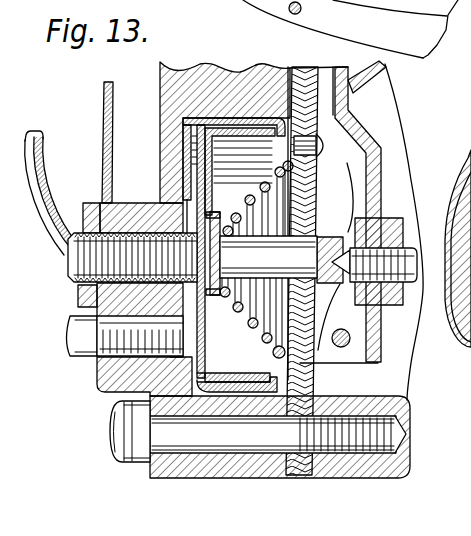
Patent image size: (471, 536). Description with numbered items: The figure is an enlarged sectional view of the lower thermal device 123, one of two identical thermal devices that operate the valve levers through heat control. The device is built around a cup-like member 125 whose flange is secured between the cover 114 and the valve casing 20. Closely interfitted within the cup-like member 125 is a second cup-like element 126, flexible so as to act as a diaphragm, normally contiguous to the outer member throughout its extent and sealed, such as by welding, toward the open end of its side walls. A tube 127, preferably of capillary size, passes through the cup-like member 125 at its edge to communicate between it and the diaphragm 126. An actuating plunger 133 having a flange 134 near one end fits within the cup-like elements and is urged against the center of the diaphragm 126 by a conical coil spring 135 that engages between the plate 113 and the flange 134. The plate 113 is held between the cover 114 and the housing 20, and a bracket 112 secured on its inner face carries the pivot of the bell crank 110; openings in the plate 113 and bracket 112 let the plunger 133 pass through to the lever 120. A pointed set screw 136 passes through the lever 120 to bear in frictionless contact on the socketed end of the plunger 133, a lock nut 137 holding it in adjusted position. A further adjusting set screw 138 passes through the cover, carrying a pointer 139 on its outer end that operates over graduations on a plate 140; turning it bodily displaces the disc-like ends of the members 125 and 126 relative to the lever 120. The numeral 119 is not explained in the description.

The casing 20 is at (393, 415).
The bell crank 110 is at (368, 79).
The bracket 112 is at (327, 152).
The plate 113 is at (312, 381).
The cover 114 is at (197, 70).
The pin 119 is at (349, 345).
The lever 120 is at (383, 157).
The thermal device 123 is at (68, 376).
The cup-like member 125 is at (80, 297).
The second cup-like element 126 is at (125, 392).
The tube 127 is at (47, 165).
The actuating plunger 133 is at (261, 253).
The flange 134 is at (197, 191).
The conical coil spring 135 is at (238, 312).
The set screw 136 is at (425, 286).
The lock nut 137 is at (393, 240).
The set screw 138 is at (83, 260).
The pointer 139 is at (93, 203).
The plate 140 is at (104, 97).